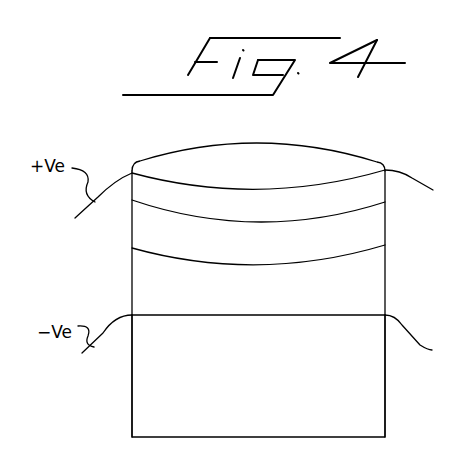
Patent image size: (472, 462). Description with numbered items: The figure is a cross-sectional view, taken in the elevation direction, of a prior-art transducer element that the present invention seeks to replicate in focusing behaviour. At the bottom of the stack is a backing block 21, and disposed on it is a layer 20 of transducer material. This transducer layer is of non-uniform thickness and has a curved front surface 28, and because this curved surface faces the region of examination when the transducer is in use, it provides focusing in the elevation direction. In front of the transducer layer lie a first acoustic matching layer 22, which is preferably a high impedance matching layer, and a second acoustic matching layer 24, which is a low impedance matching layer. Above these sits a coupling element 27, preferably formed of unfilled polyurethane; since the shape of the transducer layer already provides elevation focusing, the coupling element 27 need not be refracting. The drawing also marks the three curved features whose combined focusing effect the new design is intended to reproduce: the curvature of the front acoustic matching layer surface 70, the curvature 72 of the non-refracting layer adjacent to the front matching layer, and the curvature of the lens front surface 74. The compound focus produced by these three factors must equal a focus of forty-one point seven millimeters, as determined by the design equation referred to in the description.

The layer of transducer material 20 is at (368, 291).
The backing block 21 is at (372, 393).
The first acoustic matching layer 22 is at (370, 237).
The second acoustic matching layer 24 is at (372, 190).
The coupling element 27 is at (360, 162).
The curved front surface 28 is at (170, 261).
The front acoustic matching layer surface 70 is at (163, 188).
The curvature of the non-refracting layer 72 is at (218, 184).
The lens front surface 74 is at (270, 142).